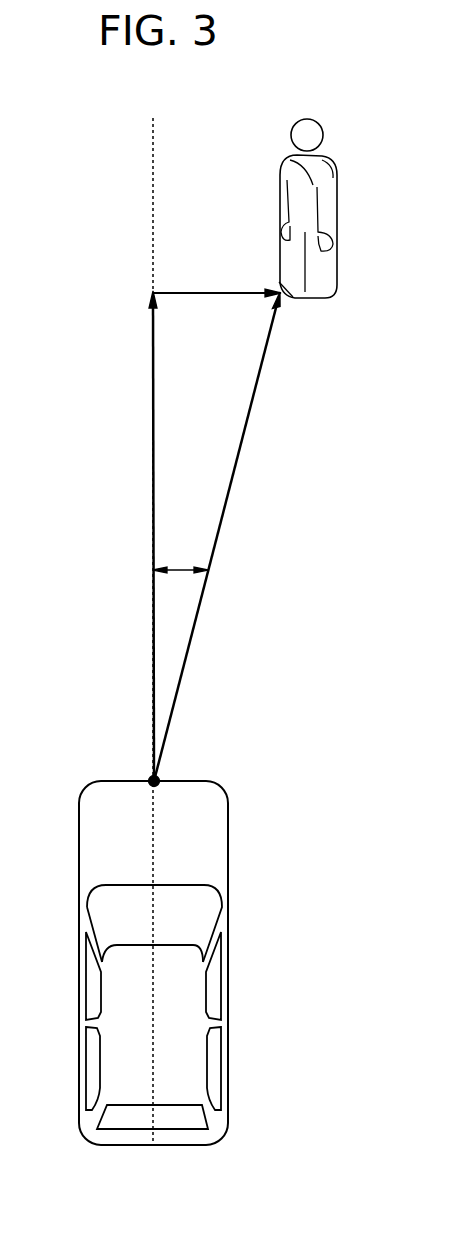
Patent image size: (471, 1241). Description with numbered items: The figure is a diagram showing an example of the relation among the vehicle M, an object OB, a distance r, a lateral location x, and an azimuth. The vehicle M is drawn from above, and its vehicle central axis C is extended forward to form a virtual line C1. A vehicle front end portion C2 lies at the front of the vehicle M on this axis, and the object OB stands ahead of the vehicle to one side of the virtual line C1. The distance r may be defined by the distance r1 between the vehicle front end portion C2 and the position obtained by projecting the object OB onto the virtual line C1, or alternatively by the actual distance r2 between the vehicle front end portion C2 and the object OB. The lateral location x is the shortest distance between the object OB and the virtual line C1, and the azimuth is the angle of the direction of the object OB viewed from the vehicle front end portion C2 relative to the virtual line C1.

The virtual line C1 is at (153, 186).
The vehicle front end portion C2 is at (151, 776).
The vehicle central axis C is at (153, 826).
The object OB is at (338, 187).
The vehicle M is at (231, 1000).
The distance r1 is at (137, 536).
The actual distance r2 is at (217, 536).
The lateral location x is at (217, 273).